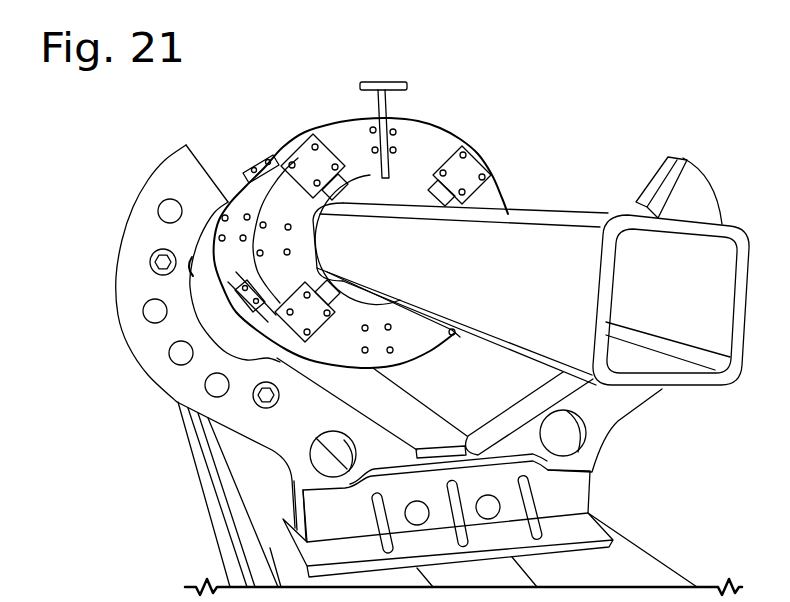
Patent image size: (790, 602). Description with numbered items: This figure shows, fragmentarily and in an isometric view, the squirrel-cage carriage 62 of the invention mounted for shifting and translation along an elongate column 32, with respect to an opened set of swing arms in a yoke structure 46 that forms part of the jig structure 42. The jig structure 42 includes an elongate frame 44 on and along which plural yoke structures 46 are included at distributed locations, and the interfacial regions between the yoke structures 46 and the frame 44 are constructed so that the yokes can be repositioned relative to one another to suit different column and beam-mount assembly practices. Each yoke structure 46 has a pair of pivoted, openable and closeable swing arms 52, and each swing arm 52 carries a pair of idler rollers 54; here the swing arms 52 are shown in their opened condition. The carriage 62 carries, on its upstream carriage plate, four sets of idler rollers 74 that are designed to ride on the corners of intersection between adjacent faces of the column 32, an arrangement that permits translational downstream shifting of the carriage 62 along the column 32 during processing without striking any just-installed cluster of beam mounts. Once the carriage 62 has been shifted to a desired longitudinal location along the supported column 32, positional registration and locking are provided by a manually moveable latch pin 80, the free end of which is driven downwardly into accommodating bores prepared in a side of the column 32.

The column 32 is at (548, 206).
The jig structure 42 is at (613, 70).
The elongate frame 44 is at (650, 548).
The yoke structure 46 is at (176, 154).
The swing arms 52 is at (146, 238).
The idler rollers 54 is at (193, 264).
The squirrel-cage carriage 62 is at (340, 143).
The idler rollers 74 is at (424, 198).
The latch pin 80 is at (378, 101).